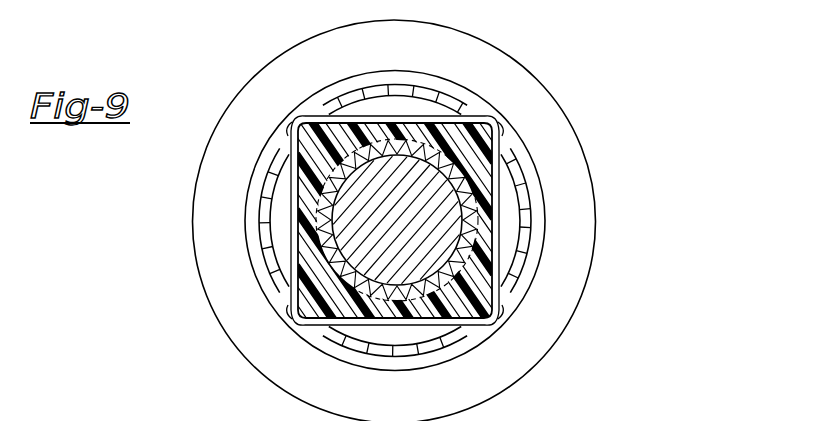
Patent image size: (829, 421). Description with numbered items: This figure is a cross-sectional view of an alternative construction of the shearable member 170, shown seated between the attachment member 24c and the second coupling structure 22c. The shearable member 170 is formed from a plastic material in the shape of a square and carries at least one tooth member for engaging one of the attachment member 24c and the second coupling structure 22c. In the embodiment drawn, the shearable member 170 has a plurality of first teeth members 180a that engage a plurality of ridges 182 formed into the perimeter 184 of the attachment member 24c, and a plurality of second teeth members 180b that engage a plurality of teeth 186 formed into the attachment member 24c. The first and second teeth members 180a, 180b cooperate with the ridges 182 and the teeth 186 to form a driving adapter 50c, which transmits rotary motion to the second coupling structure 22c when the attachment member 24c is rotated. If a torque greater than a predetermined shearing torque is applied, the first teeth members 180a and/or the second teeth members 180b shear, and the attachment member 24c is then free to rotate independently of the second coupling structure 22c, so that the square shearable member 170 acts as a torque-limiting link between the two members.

The second coupling structure 22c is at (530, 303).
The perimeter 184 is at (523, 247).
The ridges 182 is at (485, 118).
The driving adapter 50c is at (371, 112).
The first teeth members 180a is at (481, 131).
The second teeth members 180b is at (452, 196).
The shearable member 170 is at (443, 300).
The teeth 186 is at (456, 192).
The attachment member 24c is at (372, 219).